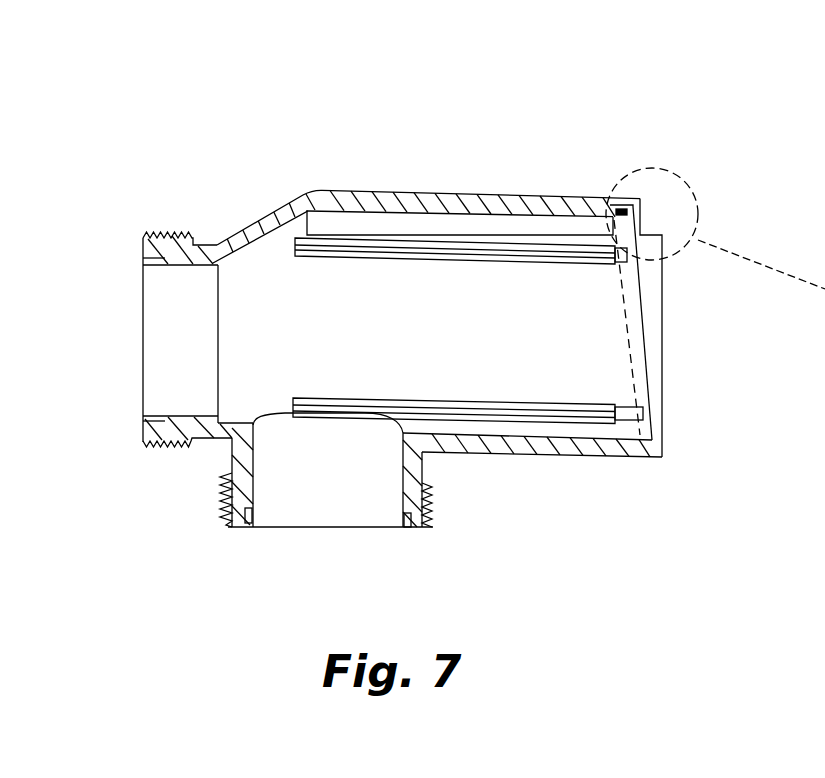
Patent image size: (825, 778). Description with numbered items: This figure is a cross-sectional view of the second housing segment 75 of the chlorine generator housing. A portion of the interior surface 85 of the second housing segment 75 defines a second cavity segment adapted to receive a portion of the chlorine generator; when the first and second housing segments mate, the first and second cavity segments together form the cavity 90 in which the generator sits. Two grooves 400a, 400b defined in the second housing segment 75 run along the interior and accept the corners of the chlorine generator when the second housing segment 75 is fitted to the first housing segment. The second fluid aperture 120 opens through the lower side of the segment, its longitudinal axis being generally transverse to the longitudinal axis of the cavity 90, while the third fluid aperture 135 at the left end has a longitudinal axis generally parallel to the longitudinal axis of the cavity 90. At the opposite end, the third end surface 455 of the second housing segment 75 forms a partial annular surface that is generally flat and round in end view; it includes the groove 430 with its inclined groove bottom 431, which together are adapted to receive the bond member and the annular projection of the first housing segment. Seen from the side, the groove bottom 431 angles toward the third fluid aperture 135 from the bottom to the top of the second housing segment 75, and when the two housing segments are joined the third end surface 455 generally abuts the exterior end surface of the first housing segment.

The second housing segment 75 is at (485, 456).
The interior surface 85 is at (503, 226).
The cavity 90 is at (567, 348).
The second fluid aperture 120 is at (308, 512).
The third fluid aperture 135 is at (173, 340).
The groove 400a is at (385, 238).
The groove 400b is at (563, 418).
The groove 430 is at (645, 207).
The inclined groove bottom 431 is at (627, 313).
The third end surface 455 is at (660, 400).